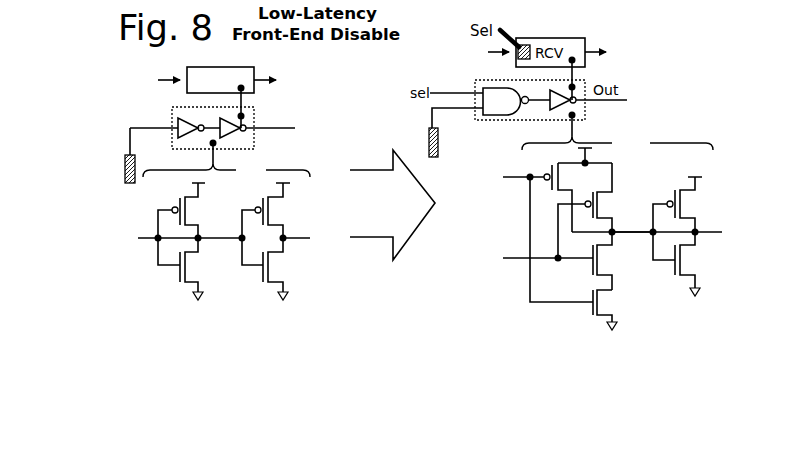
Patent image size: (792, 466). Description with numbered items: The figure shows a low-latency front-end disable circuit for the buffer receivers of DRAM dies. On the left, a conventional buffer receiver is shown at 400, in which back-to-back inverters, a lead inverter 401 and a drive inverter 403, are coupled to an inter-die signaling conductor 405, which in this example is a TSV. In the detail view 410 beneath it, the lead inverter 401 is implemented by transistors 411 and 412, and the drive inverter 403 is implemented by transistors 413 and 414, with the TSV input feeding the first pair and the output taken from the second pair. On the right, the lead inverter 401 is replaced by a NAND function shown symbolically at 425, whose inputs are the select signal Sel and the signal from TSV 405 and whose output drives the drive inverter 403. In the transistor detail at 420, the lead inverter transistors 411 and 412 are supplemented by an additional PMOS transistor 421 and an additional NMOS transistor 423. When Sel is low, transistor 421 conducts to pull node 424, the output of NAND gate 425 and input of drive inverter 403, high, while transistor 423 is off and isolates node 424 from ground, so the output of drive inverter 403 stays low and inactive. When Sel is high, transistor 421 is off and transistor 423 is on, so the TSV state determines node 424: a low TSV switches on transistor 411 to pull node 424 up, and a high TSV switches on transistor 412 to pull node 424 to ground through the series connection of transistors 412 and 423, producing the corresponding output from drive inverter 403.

The buffer receiver with back-to-back inverters 400 is at (309, 98).
The lead inverter 401 is at (193, 124).
The drive inverter 403 is at (552, 107).
The inter-die signaling conductor 405 is at (137, 161).
The detail view 410 is at (223, 214).
The transistor 411 is at (399, 200).
The transistor 412 is at (403, 266).
The transistor 413 is at (482, 207).
The transistor 414 is at (486, 266).
The transistor detail 420 is at (611, 219).
The PMOS transistor 421 is at (563, 197).
The NMOS transistor 423 is at (610, 310).
The node 424 is at (640, 222).
The NAND gate 425 is at (506, 101).